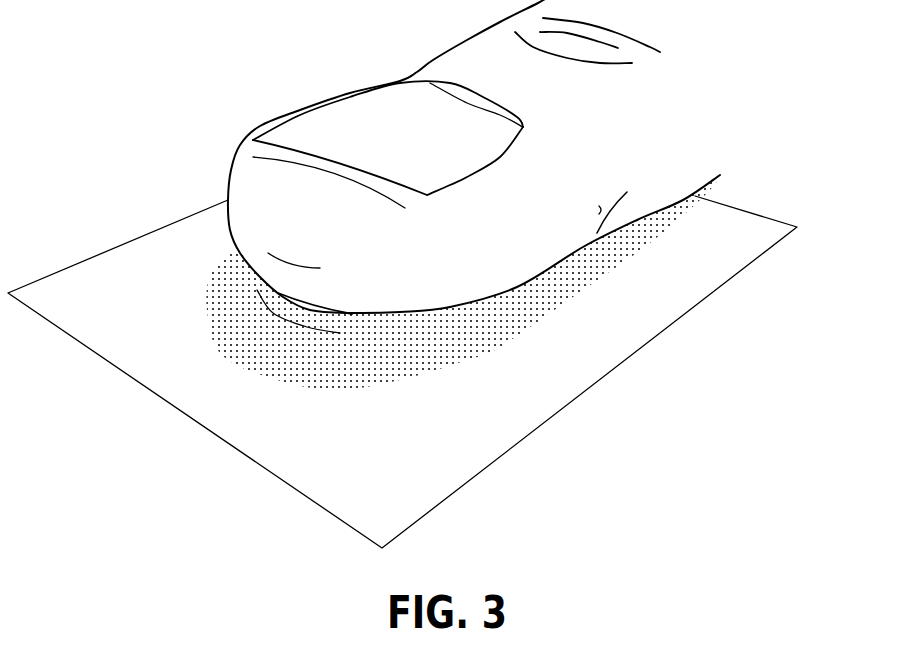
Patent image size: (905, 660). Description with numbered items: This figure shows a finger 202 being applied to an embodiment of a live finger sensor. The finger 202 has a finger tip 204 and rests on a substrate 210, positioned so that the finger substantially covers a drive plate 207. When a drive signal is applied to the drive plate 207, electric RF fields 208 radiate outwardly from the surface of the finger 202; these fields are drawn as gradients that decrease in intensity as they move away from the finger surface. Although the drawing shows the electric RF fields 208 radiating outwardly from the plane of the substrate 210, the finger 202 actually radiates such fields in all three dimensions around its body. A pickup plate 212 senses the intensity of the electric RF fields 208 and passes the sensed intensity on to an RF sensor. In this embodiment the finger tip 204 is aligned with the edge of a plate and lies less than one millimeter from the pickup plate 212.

The finger 202 is at (638, 93).
The finger tip 204 is at (246, 248).
The drive plate 207 is at (354, 321).
The electric RF fields 208 is at (436, 360).
The substrate 210 is at (724, 291).
The pickup plate 212 is at (317, 349).